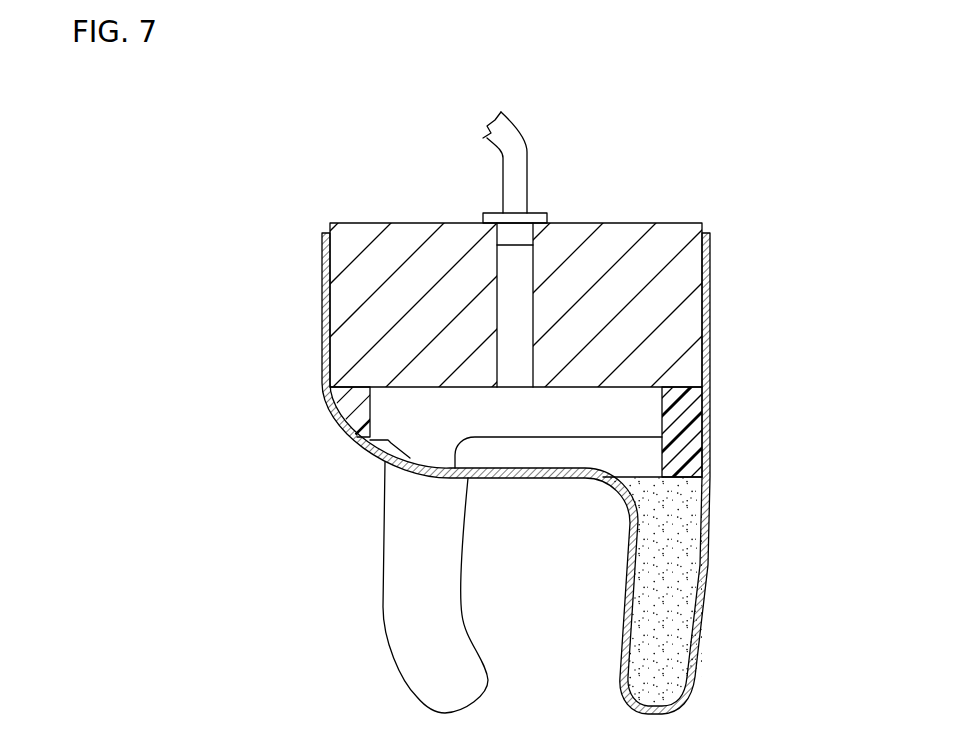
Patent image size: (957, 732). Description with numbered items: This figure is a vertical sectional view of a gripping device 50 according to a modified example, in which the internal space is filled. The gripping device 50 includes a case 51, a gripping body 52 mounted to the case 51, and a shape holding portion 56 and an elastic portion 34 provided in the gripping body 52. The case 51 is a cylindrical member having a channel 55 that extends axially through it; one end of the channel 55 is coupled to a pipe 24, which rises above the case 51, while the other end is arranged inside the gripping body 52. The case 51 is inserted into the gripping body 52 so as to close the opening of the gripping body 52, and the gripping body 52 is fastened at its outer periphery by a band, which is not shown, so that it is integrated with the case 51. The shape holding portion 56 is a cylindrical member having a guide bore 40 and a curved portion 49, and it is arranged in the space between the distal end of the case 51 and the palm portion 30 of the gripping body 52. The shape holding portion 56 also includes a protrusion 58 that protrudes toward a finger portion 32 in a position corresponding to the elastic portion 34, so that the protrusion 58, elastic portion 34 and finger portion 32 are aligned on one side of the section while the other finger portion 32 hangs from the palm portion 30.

The pipe 24 is at (515, 145).
The palm portion 30 is at (530, 479).
The finger portion 32 is at (392, 650).
The elastic portion 34 is at (681, 557).
The guide bore 40 is at (660, 420).
The curved portion 49 is at (350, 425).
The gripping device 50 is at (743, 208).
The case 51 is at (677, 270).
The gripping body 52 is at (710, 348).
The channel 55 is at (527, 305).
The shape holding portion 56 is at (373, 365).
The protrusion 58 is at (688, 462).